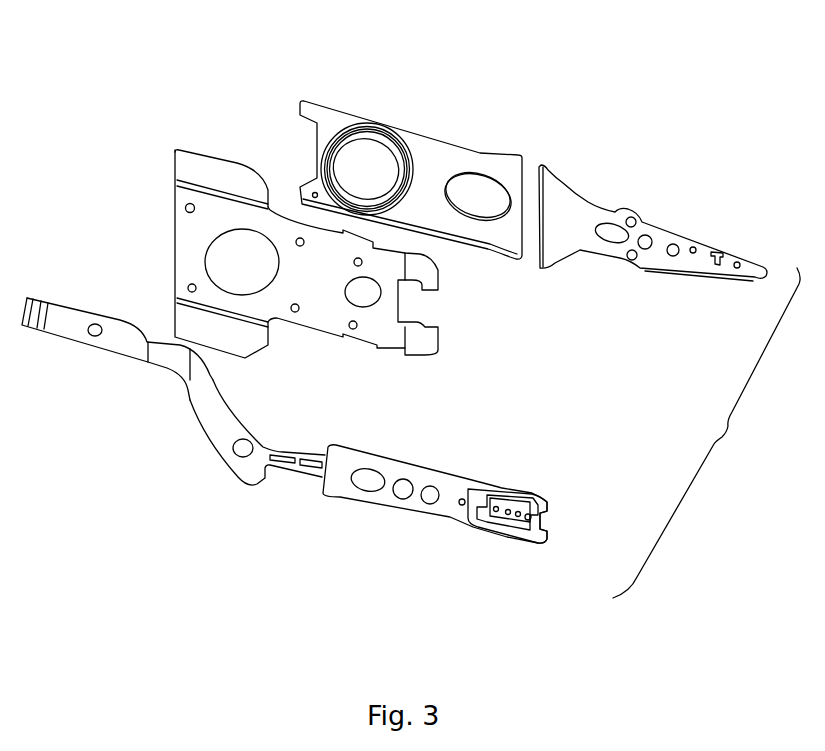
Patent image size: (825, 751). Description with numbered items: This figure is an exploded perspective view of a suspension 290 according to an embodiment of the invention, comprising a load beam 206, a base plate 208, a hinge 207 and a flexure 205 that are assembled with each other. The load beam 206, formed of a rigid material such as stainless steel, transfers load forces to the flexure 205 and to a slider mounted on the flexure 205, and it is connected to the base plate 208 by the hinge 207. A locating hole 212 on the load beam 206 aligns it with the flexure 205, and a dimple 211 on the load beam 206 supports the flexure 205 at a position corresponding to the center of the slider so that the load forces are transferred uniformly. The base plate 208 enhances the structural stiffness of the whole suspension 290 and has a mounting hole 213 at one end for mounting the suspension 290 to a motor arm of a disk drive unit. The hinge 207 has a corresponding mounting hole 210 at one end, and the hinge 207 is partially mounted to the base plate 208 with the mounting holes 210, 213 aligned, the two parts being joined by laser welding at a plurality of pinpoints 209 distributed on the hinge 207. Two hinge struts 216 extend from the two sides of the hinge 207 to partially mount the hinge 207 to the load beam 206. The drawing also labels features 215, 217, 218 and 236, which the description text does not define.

The flexure 205 is at (340, 472).
The load beam 206 is at (568, 212).
The hinge 207 is at (373, 327).
The base plate 208 is at (438, 162).
The pinpoints 209 is at (187, 206).
The mounting hole 210 is at (218, 252).
The dimple 211 is at (738, 264).
The locating hole 212 is at (650, 240).
The mounting hole 213 is at (363, 172).
The bent flange 215 is at (188, 162).
The hinge struts 216 is at (483, 527).
The holes 217 is at (402, 490).
The arm 218 is at (73, 322).
The connector pins 236 is at (510, 513).
The suspension 290 is at (706, 433).